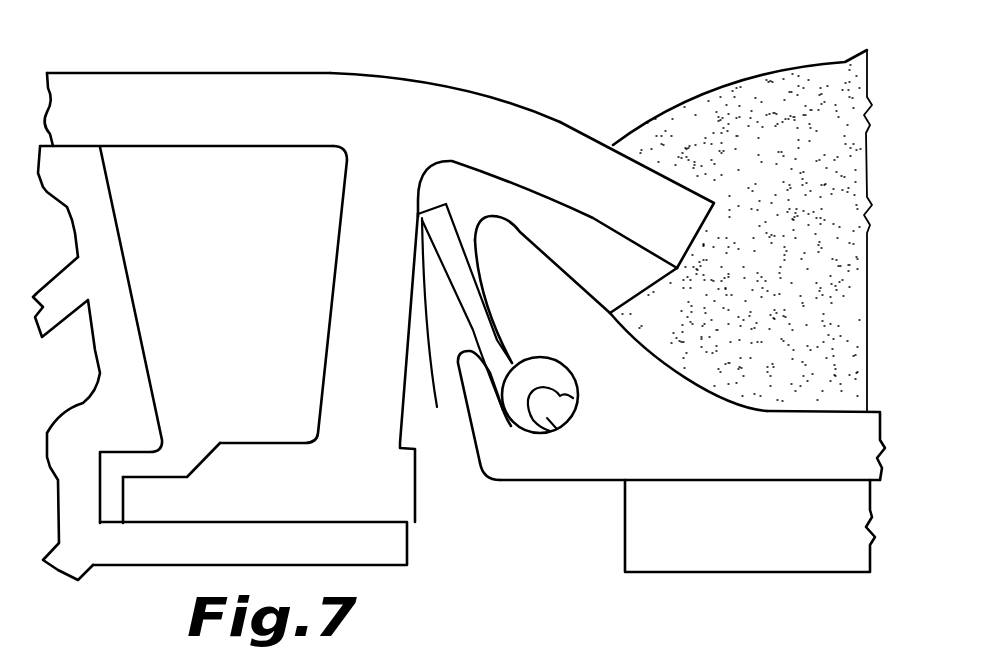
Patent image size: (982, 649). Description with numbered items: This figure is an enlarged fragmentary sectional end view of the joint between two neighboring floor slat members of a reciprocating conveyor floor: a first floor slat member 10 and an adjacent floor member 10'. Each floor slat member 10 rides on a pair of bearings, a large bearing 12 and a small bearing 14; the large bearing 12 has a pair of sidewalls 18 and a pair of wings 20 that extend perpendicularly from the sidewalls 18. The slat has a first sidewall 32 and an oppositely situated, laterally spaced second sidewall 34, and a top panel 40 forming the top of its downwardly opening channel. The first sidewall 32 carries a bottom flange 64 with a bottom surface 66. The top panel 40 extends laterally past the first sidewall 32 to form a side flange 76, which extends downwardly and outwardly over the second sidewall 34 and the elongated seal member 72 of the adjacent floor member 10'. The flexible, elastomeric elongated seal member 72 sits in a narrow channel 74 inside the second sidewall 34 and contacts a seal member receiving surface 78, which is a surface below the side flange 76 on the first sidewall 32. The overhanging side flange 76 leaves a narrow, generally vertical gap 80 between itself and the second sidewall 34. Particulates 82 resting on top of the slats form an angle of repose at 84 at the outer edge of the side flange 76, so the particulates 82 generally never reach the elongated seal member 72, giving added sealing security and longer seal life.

The floor slat member 10 is at (215, 44).
The adjacent floor member 10' is at (690, 547).
The large bearing 12 is at (127, 248).
The small bearing 14 is at (745, 560).
The sidewall of large bearing 18 is at (127, 343).
The wing of large bearing 20 is at (145, 555).
The first sidewall 32 is at (365, 287).
The second sidewall 34 is at (594, 437).
The top panel 40 is at (285, 83).
The bottom flange 64 is at (248, 450).
The bottom surface 66 is at (200, 525).
The elongated seal member 72 is at (503, 413).
The narrow channel 74 is at (560, 429).
The side flange 76 is at (563, 143).
The seal member receiving surface 78 is at (437, 407).
The gap 80 is at (483, 190).
The particulates 82 is at (708, 115).
The angle of repose 84 is at (636, 293).